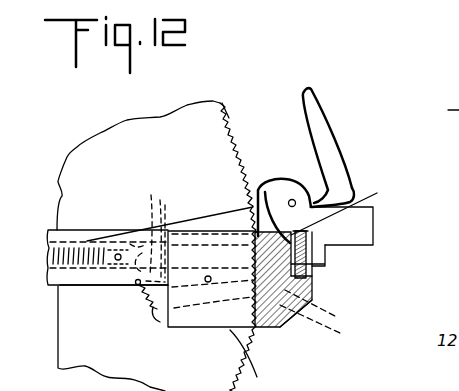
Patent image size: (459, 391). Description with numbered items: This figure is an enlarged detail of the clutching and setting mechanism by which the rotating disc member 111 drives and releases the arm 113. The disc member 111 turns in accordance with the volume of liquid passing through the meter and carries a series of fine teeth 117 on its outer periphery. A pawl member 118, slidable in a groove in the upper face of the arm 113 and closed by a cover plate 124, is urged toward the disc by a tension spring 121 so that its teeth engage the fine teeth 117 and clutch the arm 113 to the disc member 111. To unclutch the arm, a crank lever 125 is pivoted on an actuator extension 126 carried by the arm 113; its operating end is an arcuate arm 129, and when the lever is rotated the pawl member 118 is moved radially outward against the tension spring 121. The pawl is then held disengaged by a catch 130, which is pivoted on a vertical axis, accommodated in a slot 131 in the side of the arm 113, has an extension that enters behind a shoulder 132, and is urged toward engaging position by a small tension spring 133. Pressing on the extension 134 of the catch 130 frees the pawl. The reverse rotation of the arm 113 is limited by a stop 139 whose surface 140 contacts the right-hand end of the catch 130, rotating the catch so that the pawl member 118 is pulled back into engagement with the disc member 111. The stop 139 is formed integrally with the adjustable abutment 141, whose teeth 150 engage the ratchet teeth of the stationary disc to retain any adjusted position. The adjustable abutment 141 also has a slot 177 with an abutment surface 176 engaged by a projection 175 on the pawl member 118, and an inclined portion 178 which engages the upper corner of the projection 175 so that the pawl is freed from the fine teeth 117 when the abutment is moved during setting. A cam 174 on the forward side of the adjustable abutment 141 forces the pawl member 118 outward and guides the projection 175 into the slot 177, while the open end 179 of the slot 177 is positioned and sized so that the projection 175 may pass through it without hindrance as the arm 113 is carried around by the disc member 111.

The disc member 111 is at (138, 150).
The arm 113 is at (84, 287).
The fine teeth 117 is at (228, 120).
The pawl member 118 is at (153, 204).
The tension spring 121 is at (162, 224).
The cover plate 124 is at (122, 287).
The crank lever 125 is at (327, 192).
The actuator extension 126 is at (374, 224).
The arcuate arm 129 is at (317, 95).
The catch 130 is at (152, 305).
The slot 131 is at (165, 195).
The shoulder 132 is at (147, 228).
The small tension spring 133 is at (141, 290).
The extension of the catch 134 is at (326, 310).
The stop 139 is at (282, 331).
The surface 140 is at (328, 328).
The adjustable abutment 141 is at (247, 358).
The teeth 150 is at (248, 252).
The cam 174 is at (267, 198).
The projection 175 is at (326, 263).
The abutment surface 176 is at (302, 283).
The slot 177 is at (313, 237).
The inclined portion 178 is at (253, 222).
The open end 179 is at (351, 209).